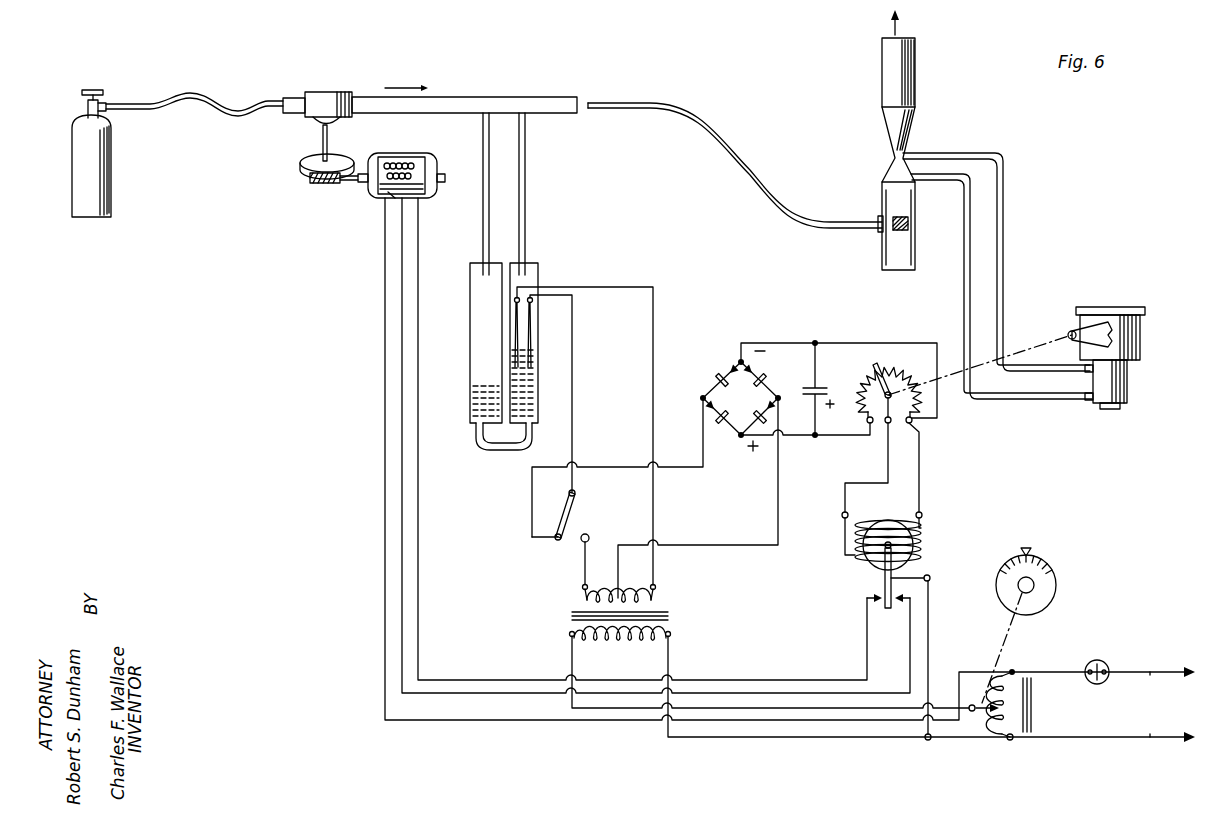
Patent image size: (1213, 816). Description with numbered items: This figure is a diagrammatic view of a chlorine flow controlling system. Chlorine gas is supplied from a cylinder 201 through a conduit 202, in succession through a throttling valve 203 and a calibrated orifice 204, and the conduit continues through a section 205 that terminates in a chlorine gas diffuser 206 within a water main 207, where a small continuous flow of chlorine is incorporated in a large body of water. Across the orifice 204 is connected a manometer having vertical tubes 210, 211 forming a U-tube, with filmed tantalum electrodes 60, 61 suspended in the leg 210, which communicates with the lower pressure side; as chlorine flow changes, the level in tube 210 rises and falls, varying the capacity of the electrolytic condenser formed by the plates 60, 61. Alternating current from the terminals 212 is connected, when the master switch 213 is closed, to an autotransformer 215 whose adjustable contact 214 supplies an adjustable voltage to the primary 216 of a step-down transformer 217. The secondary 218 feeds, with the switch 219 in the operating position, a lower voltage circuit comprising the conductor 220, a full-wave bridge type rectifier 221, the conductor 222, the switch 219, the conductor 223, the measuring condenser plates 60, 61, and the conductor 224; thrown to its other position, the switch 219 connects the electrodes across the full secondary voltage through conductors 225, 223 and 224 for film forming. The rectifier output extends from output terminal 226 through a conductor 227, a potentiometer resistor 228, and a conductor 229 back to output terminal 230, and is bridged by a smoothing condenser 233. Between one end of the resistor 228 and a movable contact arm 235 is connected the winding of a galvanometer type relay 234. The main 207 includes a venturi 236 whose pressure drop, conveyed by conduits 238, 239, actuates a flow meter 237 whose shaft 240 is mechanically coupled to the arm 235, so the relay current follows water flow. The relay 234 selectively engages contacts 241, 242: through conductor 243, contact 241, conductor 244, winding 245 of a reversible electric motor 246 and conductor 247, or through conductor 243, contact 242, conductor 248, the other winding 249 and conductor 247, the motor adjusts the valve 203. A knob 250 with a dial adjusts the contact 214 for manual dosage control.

The cylinder 201 is at (77, 165).
The conduit 202 is at (163, 93).
The throttling valve 203 is at (330, 83).
The calibrated orifice 204 is at (509, 99).
The conduit section 205 is at (697, 112).
The chlorine gas diffuser 206 is at (908, 231).
The water main 207 is at (918, 79).
The vertical tube 210 is at (539, 267).
The vertical tube 211 is at (470, 297).
The filmed tantalum electrode 60 is at (532, 320).
The filmed tantalum electrode 61 is at (520, 347).
The terminals 212 is at (1145, 674).
The master switch 213 is at (1103, 662).
The adjustable contact 214 is at (996, 712).
The autotransformer 215 is at (1008, 738).
The primary 216 is at (652, 636).
The step-down transformer 217 is at (668, 613).
The secondary 218 is at (657, 585).
The switch 219 is at (576, 493).
The conductor 220 is at (778, 503).
The full-wave bridge type rectifier 221 is at (702, 397).
The conductor 222 is at (528, 503).
The conductor 223 is at (573, 403).
The conductor 224 is at (658, 292).
The conductor 225 is at (583, 557).
The output terminal 226 is at (737, 438).
The conductor 227 is at (795, 438).
The resistor 228 is at (887, 357).
The conductor 229 is at (795, 322).
The output terminal 230 is at (738, 360).
The condenser 233 is at (818, 383).
The galvanometer type relay 234 is at (900, 508).
The movable contact arm 235 is at (893, 387).
The venturi 236 is at (910, 138).
The flow meter 237 is at (1141, 338).
The conduit 238 is at (976, 207).
The conduit 239 is at (1004, 230).
The shaft 240 is at (1068, 334).
The contact 241 is at (896, 600).
The contact 242 is at (876, 600).
The conductor 243 is at (930, 643).
The conductor 244 is at (400, 599).
The winding 245 is at (386, 199).
The reversible electric motor 246 is at (430, 158).
The conductor 247 is at (383, 572).
The conductor 248 is at (416, 630).
The winding 249 is at (403, 160).
The knob 250 is at (1048, 561).